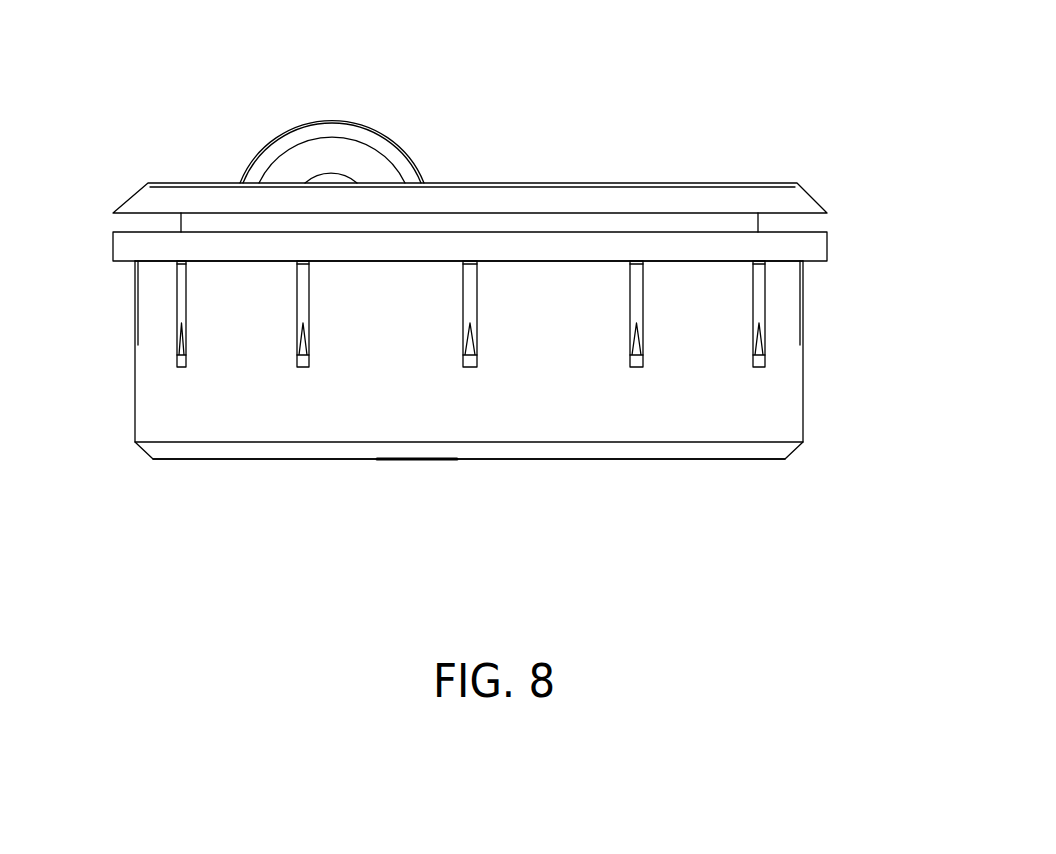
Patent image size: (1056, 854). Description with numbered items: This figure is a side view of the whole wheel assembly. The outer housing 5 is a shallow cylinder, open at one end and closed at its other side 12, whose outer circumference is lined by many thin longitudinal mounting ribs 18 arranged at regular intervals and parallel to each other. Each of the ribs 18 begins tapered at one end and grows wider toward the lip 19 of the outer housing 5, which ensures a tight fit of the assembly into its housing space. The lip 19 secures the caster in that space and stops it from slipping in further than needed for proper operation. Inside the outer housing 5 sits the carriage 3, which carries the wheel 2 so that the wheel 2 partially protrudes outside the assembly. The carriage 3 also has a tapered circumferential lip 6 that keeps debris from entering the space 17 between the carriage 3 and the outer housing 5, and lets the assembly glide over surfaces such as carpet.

The wheel 2 is at (321, 152).
The carriage 3 is at (525, 188).
The tapered circumferential lip 6 is at (785, 200).
The space 17 is at (830, 225).
The lip 19 is at (810, 248).
The outer housing 5 is at (703, 337).
The other side 12 is at (215, 458).
The mounting ribs 18 is at (470, 325).